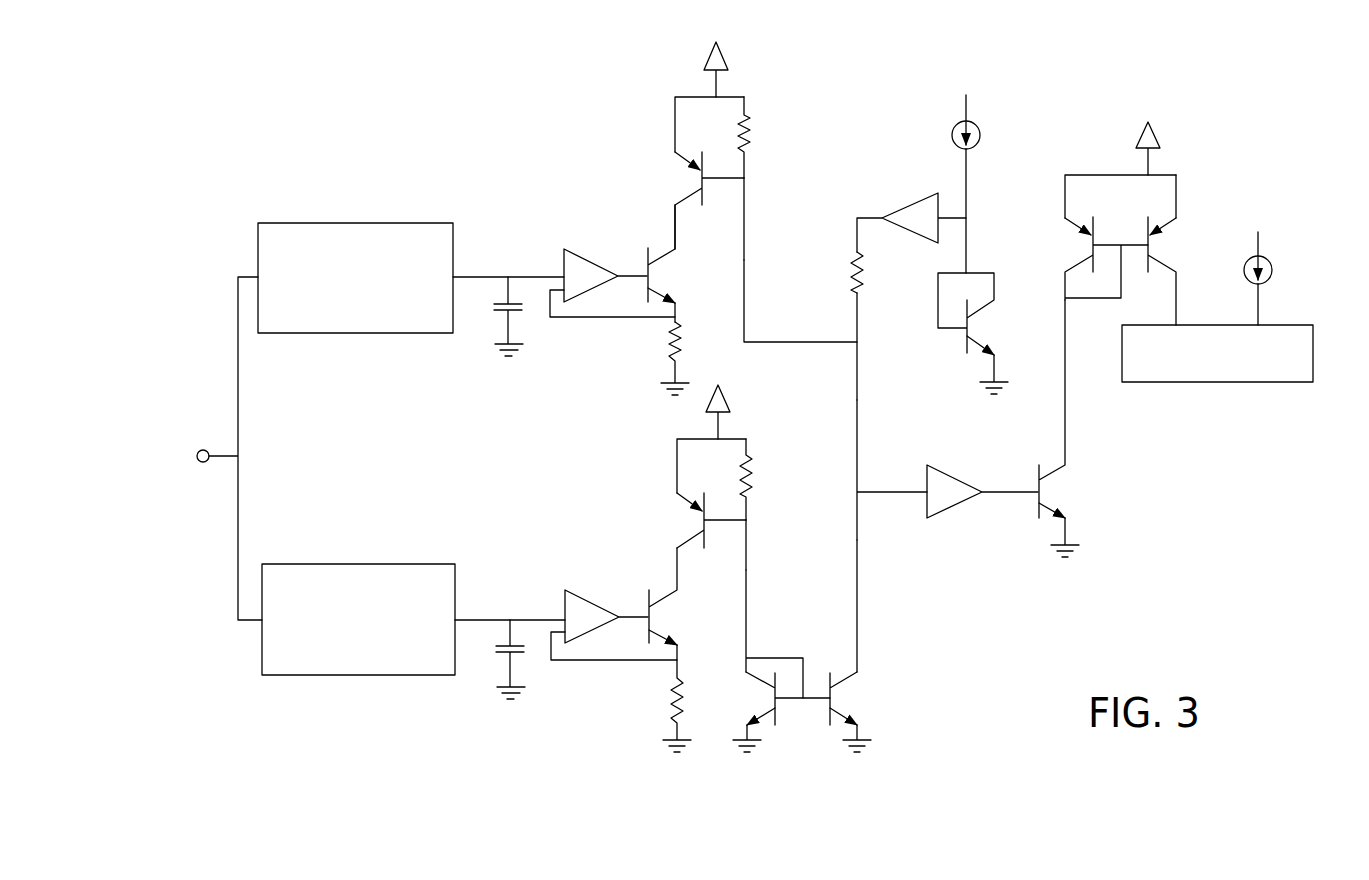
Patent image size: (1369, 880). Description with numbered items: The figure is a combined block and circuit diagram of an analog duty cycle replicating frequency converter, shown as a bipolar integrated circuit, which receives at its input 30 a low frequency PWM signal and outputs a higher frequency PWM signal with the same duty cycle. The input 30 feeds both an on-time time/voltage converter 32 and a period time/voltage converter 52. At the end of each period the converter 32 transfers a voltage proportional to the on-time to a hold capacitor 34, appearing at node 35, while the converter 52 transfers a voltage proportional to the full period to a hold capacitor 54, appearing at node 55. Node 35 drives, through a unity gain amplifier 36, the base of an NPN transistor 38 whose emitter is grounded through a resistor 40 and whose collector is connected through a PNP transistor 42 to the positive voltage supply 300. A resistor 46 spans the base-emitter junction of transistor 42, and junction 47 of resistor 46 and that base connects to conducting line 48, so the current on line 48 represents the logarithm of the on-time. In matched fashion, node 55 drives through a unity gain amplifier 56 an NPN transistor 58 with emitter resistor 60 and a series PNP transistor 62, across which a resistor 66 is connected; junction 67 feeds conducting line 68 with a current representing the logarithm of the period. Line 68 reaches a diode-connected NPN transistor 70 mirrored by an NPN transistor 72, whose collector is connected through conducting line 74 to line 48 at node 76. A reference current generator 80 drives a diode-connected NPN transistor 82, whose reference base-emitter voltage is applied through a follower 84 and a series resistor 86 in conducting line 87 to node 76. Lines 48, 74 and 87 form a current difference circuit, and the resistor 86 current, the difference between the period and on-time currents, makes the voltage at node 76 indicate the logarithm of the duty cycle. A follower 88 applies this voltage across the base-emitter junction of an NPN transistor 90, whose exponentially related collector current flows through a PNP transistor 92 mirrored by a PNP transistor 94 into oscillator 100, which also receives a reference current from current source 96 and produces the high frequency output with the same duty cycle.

The input 30 is at (200, 450).
The on-time time/voltage converter 32 is at (327, 222).
The hold capacitor 34 is at (497, 311).
The node 35 is at (509, 275).
The unity gain amplifier 36 is at (584, 248).
The NPN transistor 38 is at (655, 270).
The resistor 40 is at (668, 342).
The PNP transistor 42 is at (696, 180).
The resistor 46 is at (748, 136).
The junction 47 is at (750, 180).
The conducting line 48 is at (807, 335).
The period time/voltage converter 52 is at (330, 563).
The hold capacitor 54 is at (499, 653).
The node 55 is at (511, 618).
The unity gain amplifier 56 is at (585, 590).
The NPN transistor 58 is at (657, 613).
The resistor 60 is at (670, 706).
The PNP transistor 62 is at (698, 522).
The resistor 66 is at (750, 480).
The junction 67 is at (752, 522).
The conducting line 68 is at (752, 622).
The diode-connected NPN transistor 70 is at (768, 696).
The NPN transistor 72 is at (838, 697).
The conducting line 74 is at (865, 558).
The node 76 is at (860, 490).
The reference current generator 80 is at (977, 124).
The diode-connected NPN transistor 82 is at (972, 327).
The follower 84 is at (922, 195).
The series resistor 86 is at (862, 278).
The conducting line 87 is at (859, 316).
The follower 88 is at (957, 467).
The NPN transistor 90 is at (1047, 490).
The PNP transistor 92 is at (1087, 246).
The PNP transistor 94 is at (1157, 246).
The current source 96 is at (1244, 272).
The oscillator 100 is at (1213, 384).
The positive voltage supply 300 is at (705, 48).